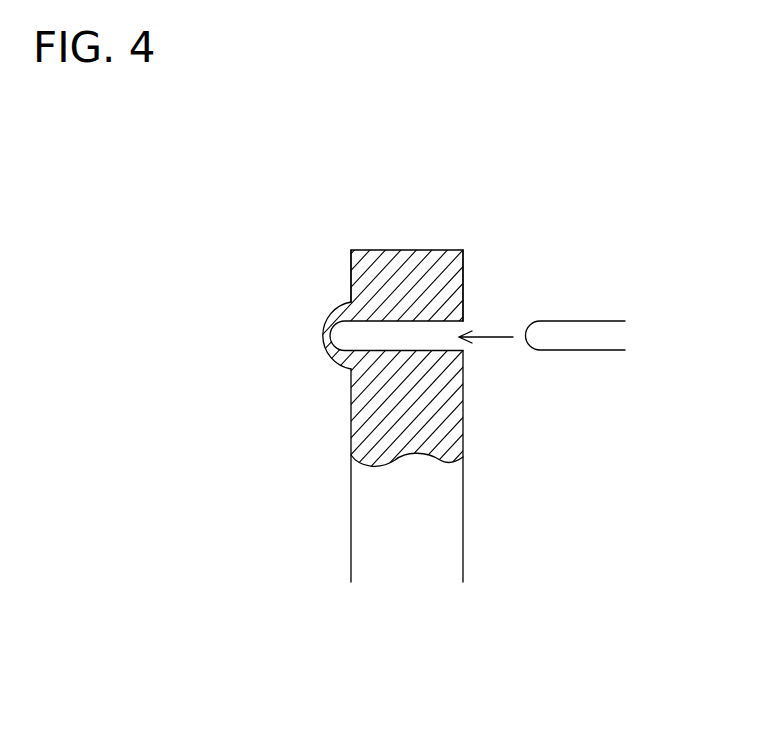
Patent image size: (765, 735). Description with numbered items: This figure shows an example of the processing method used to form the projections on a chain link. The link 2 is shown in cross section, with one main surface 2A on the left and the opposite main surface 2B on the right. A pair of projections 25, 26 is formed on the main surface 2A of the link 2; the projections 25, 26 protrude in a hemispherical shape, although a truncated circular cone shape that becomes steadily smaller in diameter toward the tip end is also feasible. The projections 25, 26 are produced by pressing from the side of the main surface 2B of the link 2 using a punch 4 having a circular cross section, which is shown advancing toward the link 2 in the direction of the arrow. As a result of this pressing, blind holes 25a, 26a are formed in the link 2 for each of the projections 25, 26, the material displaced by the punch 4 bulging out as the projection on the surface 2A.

The link 2 is at (411, 238).
The main surface 2A is at (350, 268).
The main surface 2B is at (465, 261).
The projection 25 is at (280, 316).
The projection 26 is at (318, 315).
The blind hole 25a is at (484, 305).
The blind hole 26a is at (455, 329).
The punch 4 is at (603, 342).